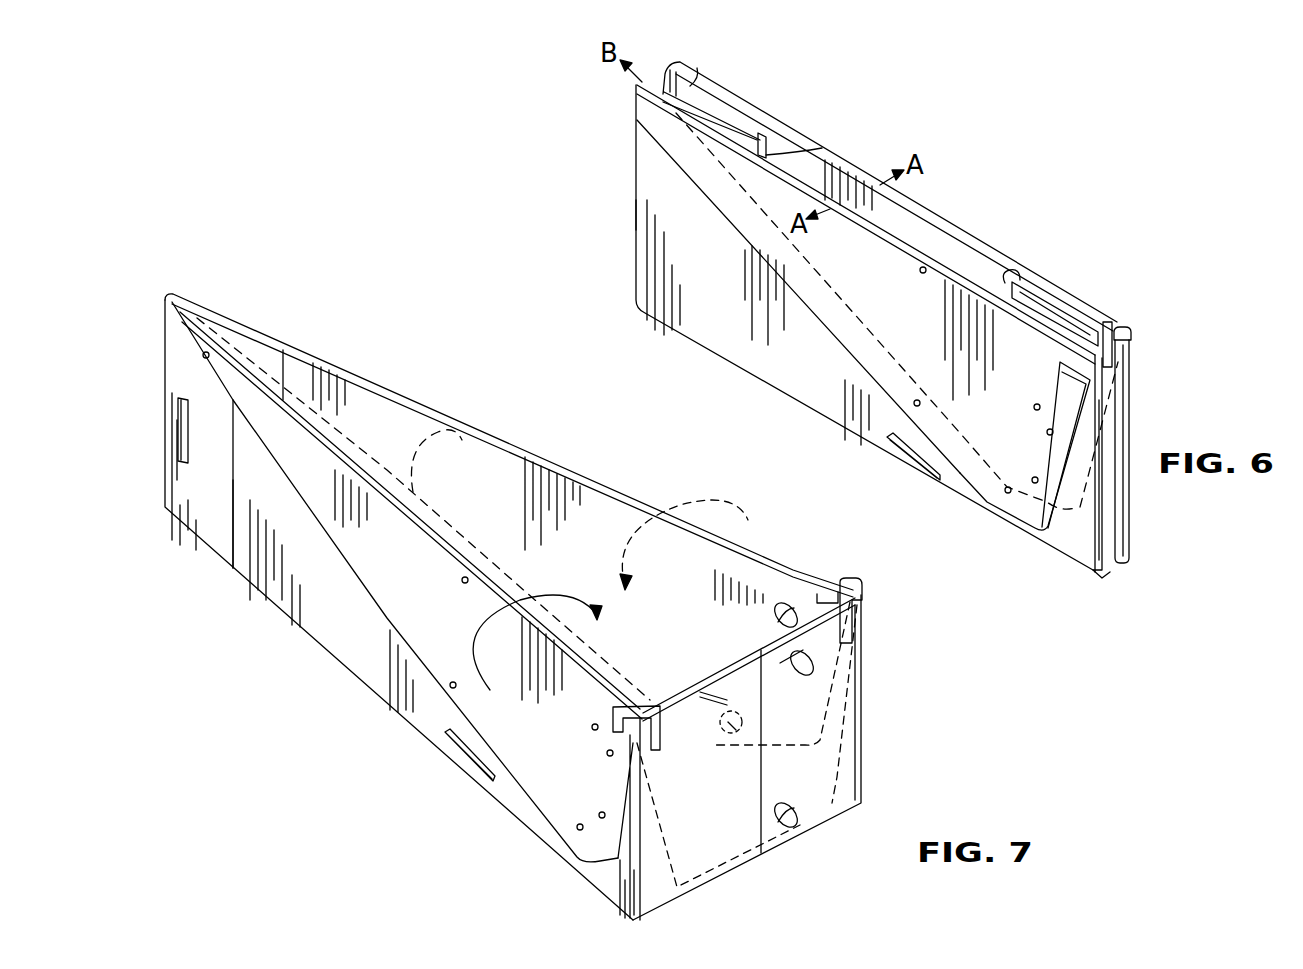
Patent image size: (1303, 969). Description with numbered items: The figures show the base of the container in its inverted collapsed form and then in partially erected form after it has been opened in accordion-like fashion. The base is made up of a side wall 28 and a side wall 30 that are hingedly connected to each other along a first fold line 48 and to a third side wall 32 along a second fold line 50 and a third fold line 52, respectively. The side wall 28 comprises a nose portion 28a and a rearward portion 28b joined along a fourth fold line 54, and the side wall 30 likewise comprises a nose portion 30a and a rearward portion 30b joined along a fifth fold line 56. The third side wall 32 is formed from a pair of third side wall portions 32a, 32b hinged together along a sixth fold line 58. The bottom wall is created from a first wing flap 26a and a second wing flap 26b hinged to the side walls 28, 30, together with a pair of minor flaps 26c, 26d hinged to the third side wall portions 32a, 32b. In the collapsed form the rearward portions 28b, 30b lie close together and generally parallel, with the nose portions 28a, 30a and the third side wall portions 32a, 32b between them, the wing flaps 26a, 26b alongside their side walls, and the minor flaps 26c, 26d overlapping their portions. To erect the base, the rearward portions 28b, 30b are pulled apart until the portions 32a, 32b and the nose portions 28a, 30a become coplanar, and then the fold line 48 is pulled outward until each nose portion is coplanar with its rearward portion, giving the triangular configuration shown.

In FIG. 6, the first wing flap 26a is at (868, 328).
In FIG. 7, the first wing flap 26a is at (455, 430).
In FIG. 6, the second wing flap 26b is at (897, 398).
In FIG. 7, the second wing flap 26b is at (527, 800).
In FIG. 7, the minor flap 26c is at (853, 816).
In FIG. 7, the minor flap 26d is at (737, 869).
In FIG. 6, the side wall 28 is at (750, 132).
In FIG. 6, the nose portion 28a is at (740, 106).
In FIG. 7, the nose portion 28a is at (251, 346).
In FIG. 6, the rearward portion 28b is at (952, 249).
In FIG. 7, the rearward portion 28b is at (511, 468).
In FIG. 6, the side wall 30 is at (690, 185).
In FIG. 7, the side wall 30 is at (509, 607).
In FIG. 6, the nose portion 30a is at (747, 145).
In FIG. 7, the nose portion 30a is at (188, 503).
In FIG. 6, the rearward portion 30b is at (652, 252).
In FIG. 7, the rearward portion 30b is at (327, 640).
In FIG. 6, the third side wall 32 is at (1048, 310).
In FIG. 6, the third side wall portion 32a is at (1125, 325).
In FIG. 7, the third side wall portion 32a is at (863, 803).
In FIG. 6, the third side wall portion 32b is at (1106, 320).
In FIG. 7, the third side wall portion 32b is at (673, 890).
In FIG. 6, the first fold line 48 is at (814, 165).
In FIG. 7, the first fold line 48 is at (165, 429).
In FIG. 6, the second fold line 50 is at (1129, 523).
In FIG. 7, the second fold line 50 is at (861, 753).
In FIG. 6, the third fold line 52 is at (1104, 566).
In FIG. 7, the third fold line 52 is at (640, 874).
In FIG. 6, the fourth fold line 54 is at (668, 71).
In FIG. 7, the fourth fold line 54 is at (288, 363).
In FIG. 6, the fifth fold line 56 is at (641, 234).
In FIG. 7, the fifth fold line 56 is at (236, 546).
In FIG. 6, the sixth fold line 58 is at (1010, 272).
In FIG. 7, the sixth fold line 58 is at (767, 838).